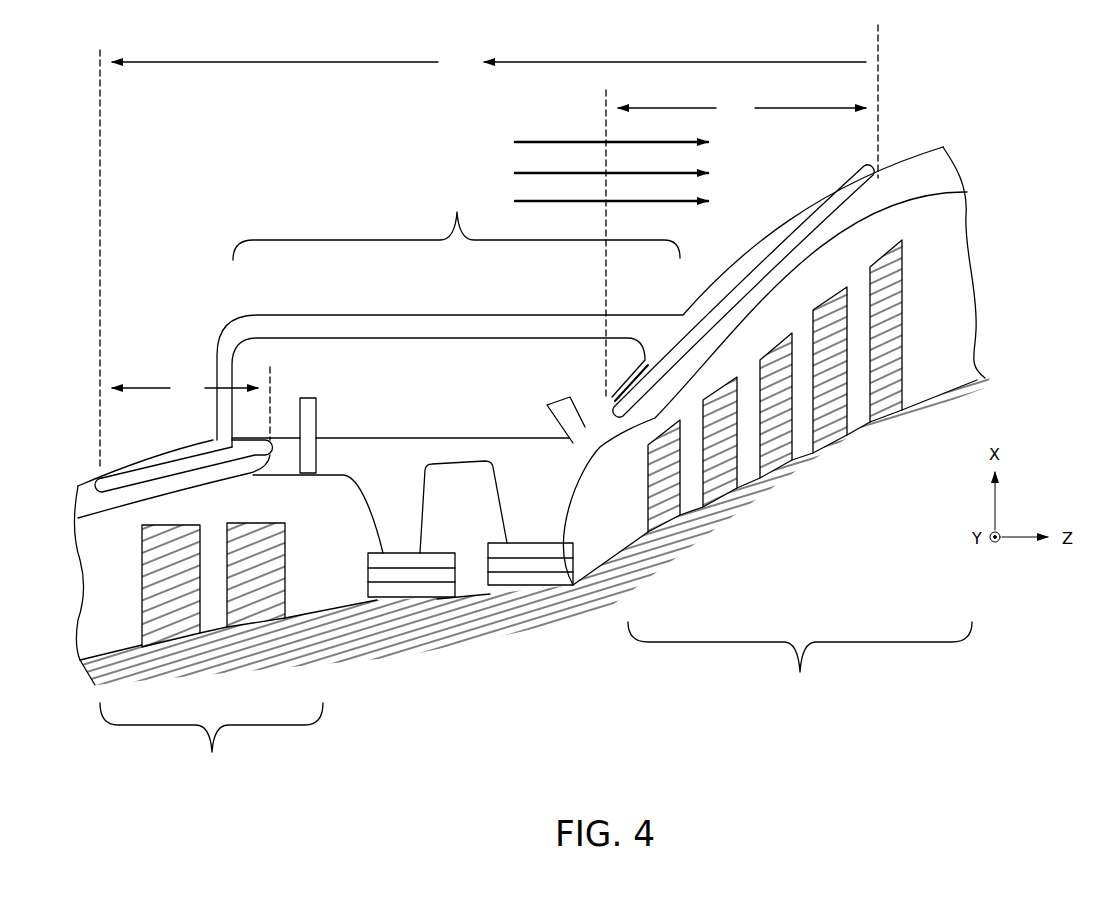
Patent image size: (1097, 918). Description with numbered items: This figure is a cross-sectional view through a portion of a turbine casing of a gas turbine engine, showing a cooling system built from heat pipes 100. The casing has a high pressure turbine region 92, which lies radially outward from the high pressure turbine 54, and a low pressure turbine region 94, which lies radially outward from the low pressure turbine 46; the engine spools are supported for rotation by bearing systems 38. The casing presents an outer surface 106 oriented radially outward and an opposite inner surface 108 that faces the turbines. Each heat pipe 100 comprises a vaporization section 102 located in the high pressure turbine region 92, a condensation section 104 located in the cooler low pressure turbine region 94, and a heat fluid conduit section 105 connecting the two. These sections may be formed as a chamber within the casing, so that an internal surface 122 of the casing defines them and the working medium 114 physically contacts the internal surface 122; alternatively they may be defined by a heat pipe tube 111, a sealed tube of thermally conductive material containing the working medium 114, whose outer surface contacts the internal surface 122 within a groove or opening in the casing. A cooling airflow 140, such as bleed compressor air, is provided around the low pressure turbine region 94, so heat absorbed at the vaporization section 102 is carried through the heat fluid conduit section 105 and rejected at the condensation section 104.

The bearing system 38 is at (563, 547).
The low pressure turbine 46 is at (773, 347).
The high pressure turbine 54 is at (142, 557).
The high pressure turbine region 92 is at (532, 579).
The low pressure turbine region 94 is at (766, 426).
The heat pipe 100 is at (489, 64).
The vaporization section 102 is at (185, 390).
The condensation section 104 is at (742, 111).
The heat fluid conduit section 105 is at (456, 220).
The outer surface 106 is at (158, 455).
The inner surface 108 is at (193, 486).
The heat pipe tube 111 is at (542, 316).
The working medium 114 is at (362, 317).
The internal surface 122 is at (257, 458).
The cooling airflow 140 is at (543, 138).